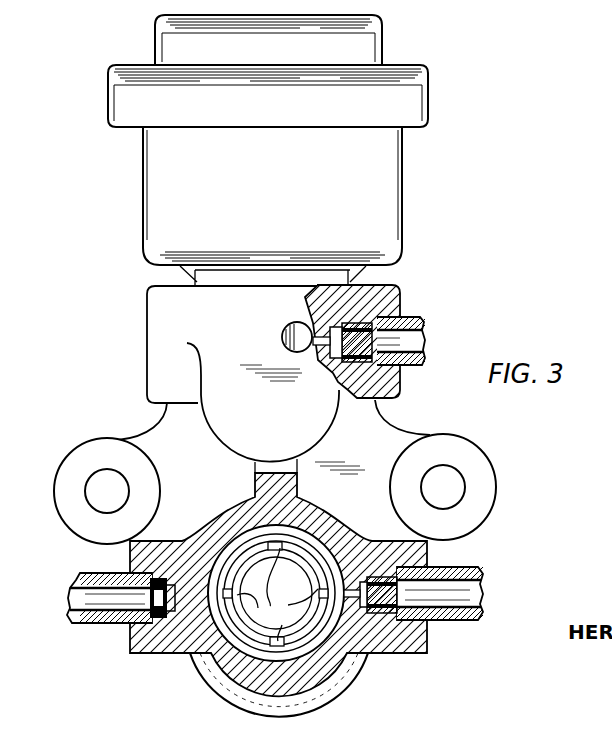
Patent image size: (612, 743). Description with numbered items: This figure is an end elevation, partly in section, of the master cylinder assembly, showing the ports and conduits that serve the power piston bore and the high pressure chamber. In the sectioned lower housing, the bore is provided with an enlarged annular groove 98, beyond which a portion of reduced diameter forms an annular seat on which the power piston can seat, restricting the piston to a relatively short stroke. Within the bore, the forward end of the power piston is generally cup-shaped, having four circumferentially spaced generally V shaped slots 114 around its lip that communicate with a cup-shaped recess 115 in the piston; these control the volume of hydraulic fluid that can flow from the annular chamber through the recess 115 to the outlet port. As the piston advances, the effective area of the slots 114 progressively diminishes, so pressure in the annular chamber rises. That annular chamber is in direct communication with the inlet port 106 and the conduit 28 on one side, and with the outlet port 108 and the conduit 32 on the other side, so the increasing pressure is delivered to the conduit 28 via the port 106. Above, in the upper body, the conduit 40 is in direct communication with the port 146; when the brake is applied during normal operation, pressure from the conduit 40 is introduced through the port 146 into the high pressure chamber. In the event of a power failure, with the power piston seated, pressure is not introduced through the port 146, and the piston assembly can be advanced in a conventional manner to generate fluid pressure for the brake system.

The conduit 28 is at (68, 626).
The conduit 32 is at (473, 567).
The conduit 40 is at (413, 315).
The enlarged annular groove 98 is at (319, 647).
The inlet port 106 is at (136, 575).
The outlet port 108 is at (403, 621).
The V shaped slots 114 is at (277, 594).
The cup-shaped recess 115 is at (293, 571).
The port 146 is at (293, 323).